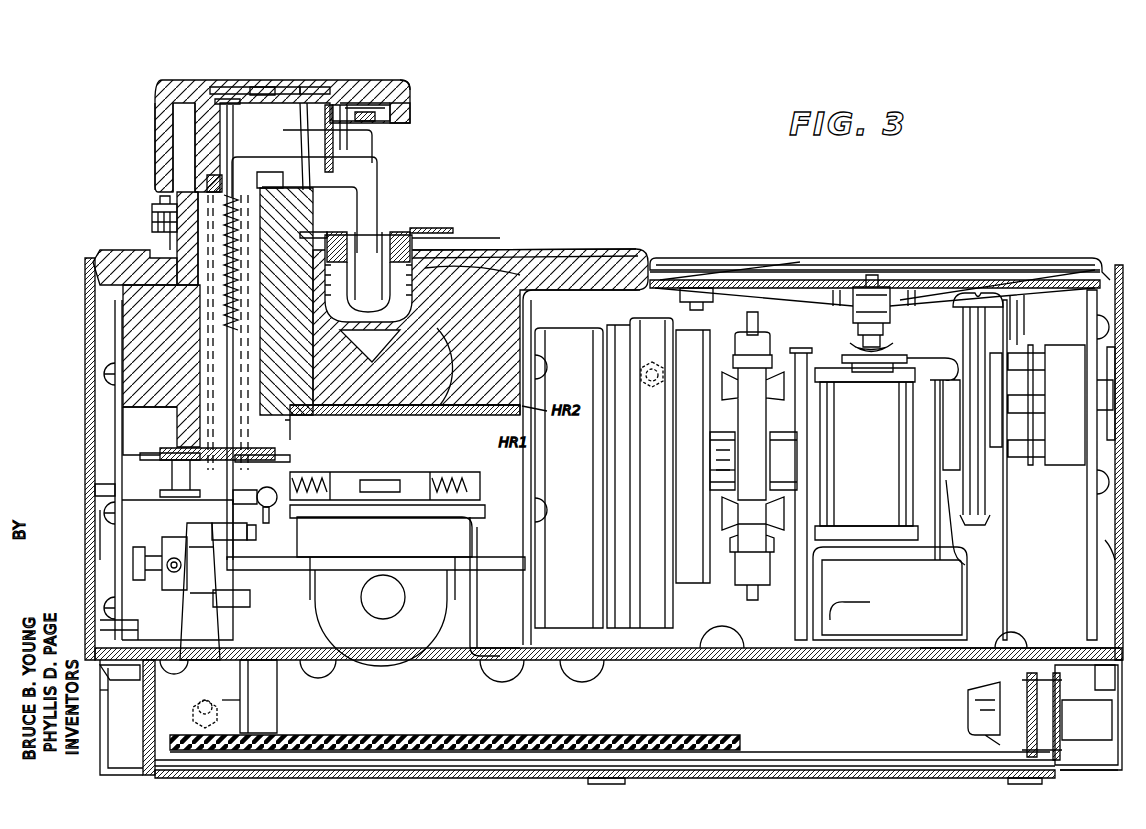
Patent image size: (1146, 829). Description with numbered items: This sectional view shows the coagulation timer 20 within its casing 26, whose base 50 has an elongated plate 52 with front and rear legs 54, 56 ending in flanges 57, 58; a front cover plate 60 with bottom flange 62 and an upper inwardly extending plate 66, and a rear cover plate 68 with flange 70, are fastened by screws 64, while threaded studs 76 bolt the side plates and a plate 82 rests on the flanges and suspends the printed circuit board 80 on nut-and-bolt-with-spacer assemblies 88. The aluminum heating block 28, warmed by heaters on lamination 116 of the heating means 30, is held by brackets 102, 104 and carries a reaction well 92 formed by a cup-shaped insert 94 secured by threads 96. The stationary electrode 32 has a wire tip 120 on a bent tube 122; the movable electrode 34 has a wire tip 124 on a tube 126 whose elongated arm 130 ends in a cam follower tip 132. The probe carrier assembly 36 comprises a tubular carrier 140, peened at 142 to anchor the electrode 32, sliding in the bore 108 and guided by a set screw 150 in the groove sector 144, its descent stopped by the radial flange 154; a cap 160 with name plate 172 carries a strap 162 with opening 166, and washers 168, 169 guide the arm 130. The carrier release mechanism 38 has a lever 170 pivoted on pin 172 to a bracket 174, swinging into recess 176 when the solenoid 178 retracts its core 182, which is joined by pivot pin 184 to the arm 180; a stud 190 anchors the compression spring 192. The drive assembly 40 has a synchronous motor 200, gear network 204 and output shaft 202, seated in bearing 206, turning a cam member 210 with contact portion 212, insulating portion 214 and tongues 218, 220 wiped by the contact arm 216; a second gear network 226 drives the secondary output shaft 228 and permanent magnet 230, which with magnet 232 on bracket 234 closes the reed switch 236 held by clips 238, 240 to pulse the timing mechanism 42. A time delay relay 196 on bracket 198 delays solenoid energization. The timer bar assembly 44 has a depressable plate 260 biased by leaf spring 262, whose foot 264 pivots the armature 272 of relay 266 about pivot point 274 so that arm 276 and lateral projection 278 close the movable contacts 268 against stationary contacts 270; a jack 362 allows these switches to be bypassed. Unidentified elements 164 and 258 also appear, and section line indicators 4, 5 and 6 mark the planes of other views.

The coagulation timer 20 is at (470, 200).
The casing 26 is at (1123, 520).
The heating block 28 is at (565, 246).
The heating means 30 is at (482, 418).
The stationary electrode 32 is at (342, 234).
The movable electrode 34 is at (408, 228).
The probe carrier assembly 36 is at (263, 74).
The carrier release mechanism 38 is at (312, 470).
The drive assembly 40 is at (546, 662).
The timing mechanism 42 is at (750, 608).
The timer bar assembly 44 is at (812, 236).
The base 50 is at (545, 770).
The elongated plate 52 is at (850, 762).
The front leg 54 is at (1064, 720).
The rear leg 56 is at (146, 712).
The flange 57 is at (1120, 664).
The flange 58 is at (116, 668).
The front cover plate 60 is at (1121, 556).
The bottom flange 62 is at (1087, 712).
The rivets or screws 64 is at (1095, 672).
The upper inwardly extending plate 66 is at (975, 279).
The rear cover plate 68 is at (92, 490).
The bottom inwardly extending flange 70 is at (104, 690).
The threaded studs 76 is at (660, 380).
The printed circuit board 80 is at (452, 734).
The plate 82 is at (966, 660).
The nut-and-bolt-with-spacer assemblies 88 is at (276, 700).
The reaction well 92 is at (498, 270).
The cup-shaped insert 94 is at (244, 275).
The interengaging threads 96 is at (436, 416).
The bracket 102 is at (118, 398).
The bracket 104 is at (533, 442).
The vertically extending bore 108 is at (291, 421).
The lamination 116 is at (394, 416).
The wire tip 120 is at (278, 246).
The tube 122 is at (362, 213).
The wire tip 124 is at (425, 248).
The tube 126 is at (382, 182).
The elongated arm 130 is at (228, 343).
The cam follower tip 132 is at (244, 574).
The tubular carrier 140 is at (186, 409).
The peened portion 142 is at (276, 172).
The groove sector 144 is at (180, 247).
The set screw 150 is at (156, 210).
The radial flange 154 is at (170, 182).
The cap 160 is at (330, 85).
The strap 162 is at (386, 80).
The slot 164 is at (411, 96).
The opening 166 is at (376, 142).
The washer 168 is at (212, 450).
The washer 169 is at (212, 178).
The lever 170 is at (90, 258).
The pivot pin 172 is at (242, 80).
The bracket 174 is at (219, 636).
The recess 176 is at (222, 266).
The solenoid 178 is at (135, 636).
The arm 180 is at (277, 456).
The core 182 is at (150, 456).
The pivot pin 184 is at (163, 472).
The stud 190 is at (322, 535).
The compression spring 192 is at (267, 487).
The time delay relay 196 is at (421, 664).
The bracket 198 is at (478, 621).
The synchronous motor 200 is at (665, 325).
The output shaft 202 is at (410, 588).
The gear network 204 is at (586, 340).
The bearing 206 is at (132, 546).
The cam member 210 is at (174, 578).
The cam contact portion 212 is at (230, 523).
The cam insulating portion 214 is at (176, 537).
The contact arm 216 is at (278, 692).
The contact tongue 218 is at (256, 534).
The contact tongue 220 is at (250, 604).
The second gear network 226 is at (700, 338).
The secondary output shaft 228 is at (712, 440).
The permanent magnet 230 is at (712, 485).
The magnet 232 is at (822, 460).
The bracket 234 is at (812, 622).
The reed switch 236 is at (822, 417).
The mounting clip 238 is at (800, 375).
The mounting clip 240 is at (808, 507).
The panel 258 is at (1020, 590).
The manually depressable plate 260 is at (912, 262).
The leaf spring 262 is at (740, 282).
The foot 264 is at (884, 345).
The relay 266 is at (896, 560).
The movable contacts 268 is at (972, 501).
The stationary contacts 270 is at (983, 509).
The armature 272 is at (858, 352).
The pivot point 274 is at (886, 356).
The downwardly depending arm 276 is at (930, 401).
The lateral projection 278 is at (961, 492).
The jack 362 is at (1082, 753).
The section line 4 is at (1112, 232).
The section line 5 is at (372, 132).
The section line 6 is at (62, 158).